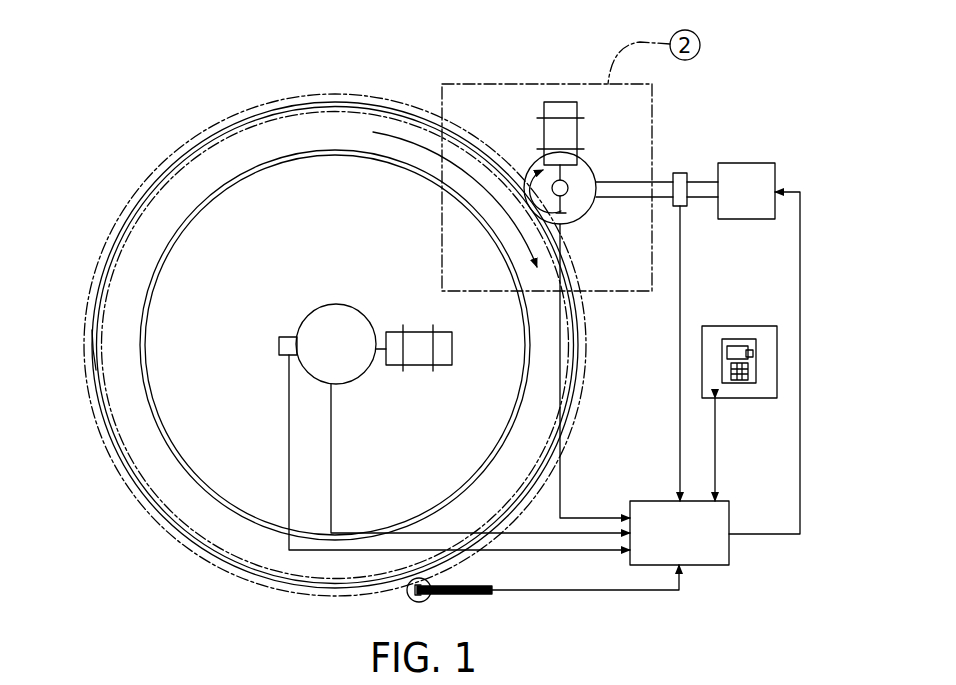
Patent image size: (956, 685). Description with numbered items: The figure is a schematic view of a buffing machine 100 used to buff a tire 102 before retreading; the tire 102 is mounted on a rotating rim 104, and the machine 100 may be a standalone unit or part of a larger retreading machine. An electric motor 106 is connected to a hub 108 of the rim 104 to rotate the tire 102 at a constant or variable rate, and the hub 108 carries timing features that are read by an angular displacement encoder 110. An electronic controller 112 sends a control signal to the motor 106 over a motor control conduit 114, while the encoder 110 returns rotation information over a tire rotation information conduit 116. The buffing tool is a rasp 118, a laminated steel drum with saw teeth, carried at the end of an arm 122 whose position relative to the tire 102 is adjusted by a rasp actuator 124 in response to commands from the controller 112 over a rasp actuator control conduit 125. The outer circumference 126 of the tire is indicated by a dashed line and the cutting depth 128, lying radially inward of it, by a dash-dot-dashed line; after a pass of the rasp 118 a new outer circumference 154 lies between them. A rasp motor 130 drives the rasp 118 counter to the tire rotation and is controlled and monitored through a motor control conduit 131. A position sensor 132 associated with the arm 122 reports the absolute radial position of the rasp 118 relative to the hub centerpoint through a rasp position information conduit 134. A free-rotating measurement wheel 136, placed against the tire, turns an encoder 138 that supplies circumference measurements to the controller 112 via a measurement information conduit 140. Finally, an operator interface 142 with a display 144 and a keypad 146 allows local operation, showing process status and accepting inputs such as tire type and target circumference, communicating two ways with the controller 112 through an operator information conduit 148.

The buffing machine 100 is at (522, 72).
The tire 102 is at (300, 137).
The rotating rim 104 is at (183, 293).
The electric motor 106 is at (417, 365).
The hub 108 is at (333, 303).
The angular displacement encoder 110 is at (285, 337).
The electronic controller 112 is at (729, 552).
The motor control conduit 114 is at (332, 465).
The tire rotation information conduit 116 is at (289, 445).
The rasp 118 is at (590, 168).
The arm 122 is at (700, 206).
The rasp actuator 124 is at (745, 163).
The rasp actuator control conduit 125 is at (800, 275).
The outer circumference 126 is at (84, 345).
The cutting depth 128 is at (120, 463).
The rasp motor 130 is at (544, 135).
The motor control conduit 131 is at (562, 492).
The position sensor 132 is at (682, 173).
The rasp position information conduit 134 is at (679, 385).
The measurement wheel 136 is at (420, 600).
The encoder 138 is at (470, 592).
The measurement information conduit 140 is at (610, 590).
The operator interface 142 is at (724, 326).
The display 144 is at (747, 354).
The keypad 146 is at (737, 383).
The operator information conduit 148 is at (715, 457).
The new outer circumference 154 is at (98, 397).